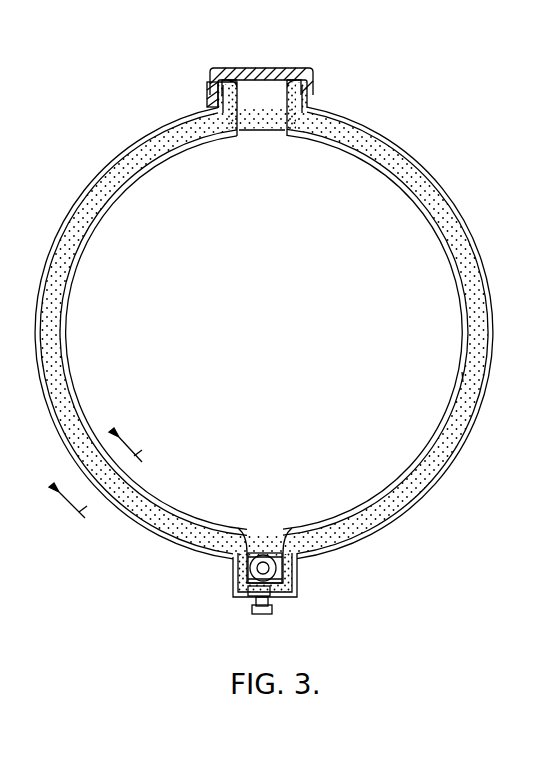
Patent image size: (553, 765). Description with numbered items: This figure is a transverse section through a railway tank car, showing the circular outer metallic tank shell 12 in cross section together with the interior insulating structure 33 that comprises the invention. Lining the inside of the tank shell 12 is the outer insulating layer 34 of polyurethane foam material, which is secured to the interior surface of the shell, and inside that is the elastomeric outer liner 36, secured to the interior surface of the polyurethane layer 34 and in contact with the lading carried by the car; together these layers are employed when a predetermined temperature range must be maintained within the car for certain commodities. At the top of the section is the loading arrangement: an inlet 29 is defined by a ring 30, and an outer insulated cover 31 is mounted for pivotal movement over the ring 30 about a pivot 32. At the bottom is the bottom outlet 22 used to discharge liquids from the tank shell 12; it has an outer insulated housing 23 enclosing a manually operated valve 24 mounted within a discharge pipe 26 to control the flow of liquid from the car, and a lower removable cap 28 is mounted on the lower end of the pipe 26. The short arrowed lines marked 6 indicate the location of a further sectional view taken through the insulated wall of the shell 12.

The section line 6- 6 is at (104, 479).
The outer metallic tank shell 12 is at (437, 200).
The bottom outlet 22 is at (246, 559).
The outer insulated housing 23 is at (289, 584).
The manually operated valve 24 is at (263, 566).
The discharge pipe 26 is at (259, 592).
The lower removable cap 28 is at (282, 616).
The inlet 29 is at (279, 118).
The ring 30 is at (308, 108).
The outer insulated cover 31 is at (294, 75).
The pivot 32 is at (208, 105).
The interior insulating structure 33 is at (471, 299).
The outer insulating layer 34 is at (60, 294).
The elastomeric outer liner 36 is at (462, 377).